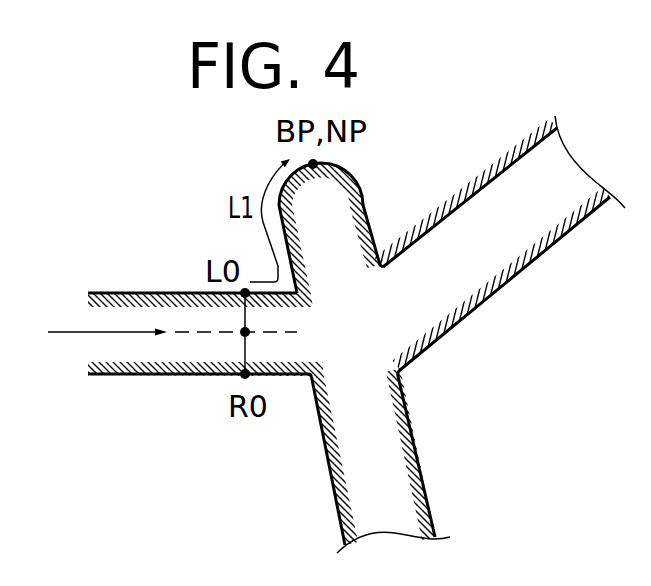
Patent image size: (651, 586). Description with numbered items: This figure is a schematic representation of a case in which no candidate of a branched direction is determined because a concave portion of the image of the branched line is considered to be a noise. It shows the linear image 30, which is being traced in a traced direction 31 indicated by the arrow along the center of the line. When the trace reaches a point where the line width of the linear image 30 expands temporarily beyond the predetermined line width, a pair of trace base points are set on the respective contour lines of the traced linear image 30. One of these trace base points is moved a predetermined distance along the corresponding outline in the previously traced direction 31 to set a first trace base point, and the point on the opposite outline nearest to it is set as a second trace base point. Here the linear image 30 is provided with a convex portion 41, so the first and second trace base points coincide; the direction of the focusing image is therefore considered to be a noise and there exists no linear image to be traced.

The linear image 30 is at (119, 292).
The traced direction 31 is at (73, 333).
The convex portion 41 is at (333, 203).